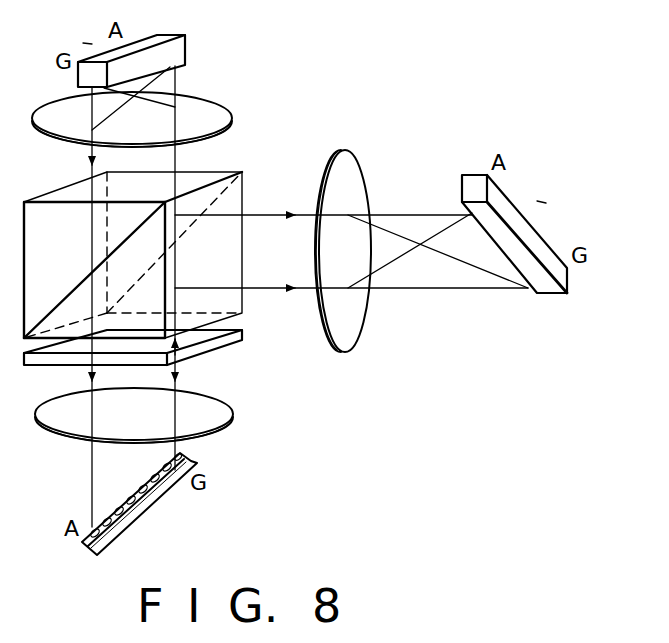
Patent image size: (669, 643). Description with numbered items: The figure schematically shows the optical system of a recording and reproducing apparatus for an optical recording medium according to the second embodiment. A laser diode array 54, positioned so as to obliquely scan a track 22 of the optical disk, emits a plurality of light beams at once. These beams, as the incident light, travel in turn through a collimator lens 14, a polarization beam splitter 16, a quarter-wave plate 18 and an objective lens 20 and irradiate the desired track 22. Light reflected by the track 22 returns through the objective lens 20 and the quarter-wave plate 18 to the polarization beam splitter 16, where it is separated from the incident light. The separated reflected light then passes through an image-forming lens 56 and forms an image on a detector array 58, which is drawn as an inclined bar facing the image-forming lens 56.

The light source bar 54 is at (182, 47).
The collimating lens 14 is at (212, 107).
The beam splitter cube 16 is at (213, 175).
The plate 18 is at (230, 340).
The focusing lens 20 is at (217, 415).
The detector array 22 is at (128, 525).
The lens 56 is at (357, 315).
The detector bar 58 is at (547, 287).